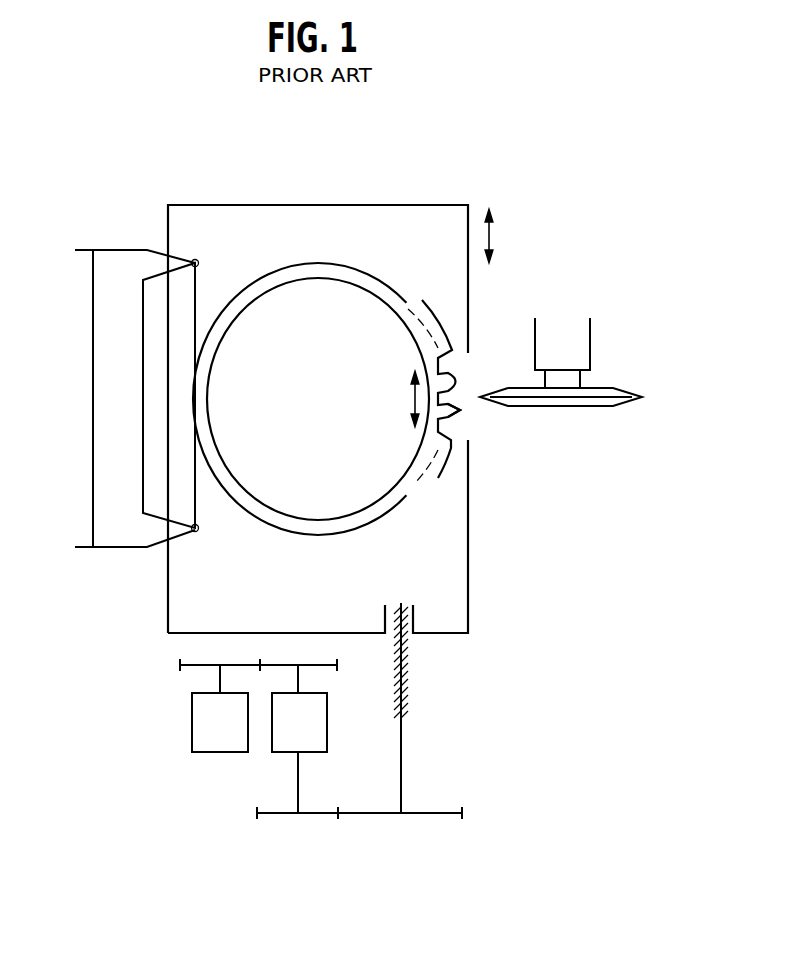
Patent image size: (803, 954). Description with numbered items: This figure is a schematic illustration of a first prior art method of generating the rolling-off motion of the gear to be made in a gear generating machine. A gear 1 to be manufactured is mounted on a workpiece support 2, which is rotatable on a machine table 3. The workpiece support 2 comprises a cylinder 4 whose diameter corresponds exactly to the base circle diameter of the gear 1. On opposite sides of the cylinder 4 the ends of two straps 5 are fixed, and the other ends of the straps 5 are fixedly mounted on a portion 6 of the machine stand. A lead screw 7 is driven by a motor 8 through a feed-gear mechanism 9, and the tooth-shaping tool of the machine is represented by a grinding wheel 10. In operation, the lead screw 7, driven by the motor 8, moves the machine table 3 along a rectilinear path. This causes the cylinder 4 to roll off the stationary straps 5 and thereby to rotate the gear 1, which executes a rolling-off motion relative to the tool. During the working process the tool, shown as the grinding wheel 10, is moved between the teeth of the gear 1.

The gear 1 is at (462, 411).
The workpiece support 2 is at (400, 302).
The machine table 3 is at (348, 235).
The cylinder 4 is at (348, 333).
The straps 5 is at (195, 309).
The portion of the machine stand 6 is at (110, 427).
The lead screw 7 is at (403, 670).
The motor 8 is at (207, 722).
The feed-gear mechanism 9 is at (288, 733).
The grinding wheel 10 is at (607, 392).